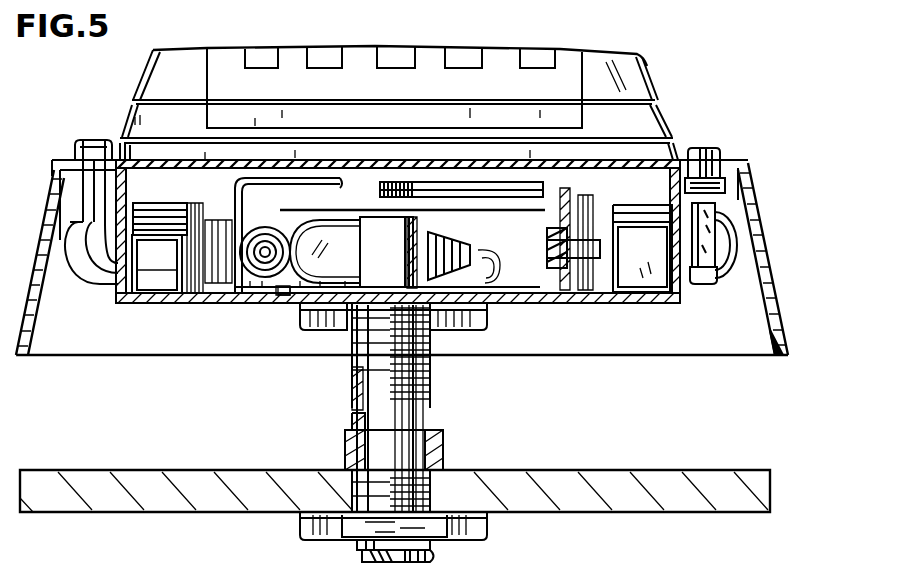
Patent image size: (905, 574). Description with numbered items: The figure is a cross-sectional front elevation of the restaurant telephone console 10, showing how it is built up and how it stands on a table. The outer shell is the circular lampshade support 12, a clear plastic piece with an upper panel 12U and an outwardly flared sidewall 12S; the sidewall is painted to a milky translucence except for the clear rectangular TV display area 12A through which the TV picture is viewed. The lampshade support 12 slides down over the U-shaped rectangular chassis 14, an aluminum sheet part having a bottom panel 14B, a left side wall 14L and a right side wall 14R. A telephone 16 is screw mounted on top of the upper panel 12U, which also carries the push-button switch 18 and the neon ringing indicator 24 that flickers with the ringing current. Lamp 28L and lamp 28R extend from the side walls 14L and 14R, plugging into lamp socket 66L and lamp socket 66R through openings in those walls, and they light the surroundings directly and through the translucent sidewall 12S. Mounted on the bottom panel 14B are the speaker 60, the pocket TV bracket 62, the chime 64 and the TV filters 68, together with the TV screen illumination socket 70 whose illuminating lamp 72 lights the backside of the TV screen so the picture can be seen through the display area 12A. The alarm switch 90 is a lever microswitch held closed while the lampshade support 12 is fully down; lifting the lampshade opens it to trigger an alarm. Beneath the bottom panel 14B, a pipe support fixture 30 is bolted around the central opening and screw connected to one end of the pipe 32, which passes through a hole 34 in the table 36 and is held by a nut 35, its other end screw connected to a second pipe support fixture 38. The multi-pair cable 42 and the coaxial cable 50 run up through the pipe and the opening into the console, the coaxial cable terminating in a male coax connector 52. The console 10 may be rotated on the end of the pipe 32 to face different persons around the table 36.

The restaurant telephone console 10 is at (241, 39).
The telephone 16 is at (637, 54).
The neon ringing indicator 24 is at (97, 140).
The lamp 28L is at (100, 280).
The lamp 28R is at (742, 200).
The upper panel 12U is at (723, 165).
The push-button switch 18 is at (678, 199).
The circular lampshade support 12 is at (781, 357).
The outwardly flared sidewall 12S is at (760, 298).
The rectangular TV display area 12A is at (755, 312).
The U-shaped rectangular chassis 14 is at (122, 302).
The left side wall 14L is at (110, 297).
The right side wall 14R is at (680, 293).
The bottom panel 14B is at (610, 303).
The lamp socket 66L is at (160, 220).
The chime 64 is at (168, 268).
The alarm switch 90 is at (157, 281).
The pocket TV bracket 62 is at (235, 183).
The male coax connector 52 is at (282, 225).
The illuminating lamp 72 is at (328, 232).
The TV screen illumination socket 70 is at (395, 252).
The speaker 60 is at (572, 190).
The lamp socket 66R is at (560, 240).
The TV filters 68 is at (650, 261).
The pipe support fixture 30 is at (462, 318).
The pipe 32 is at (430, 370).
The nut 35 is at (447, 445).
The table 36 is at (545, 468).
The hole 34 is at (352, 478).
The pipe support fixture 38 is at (486, 528).
The multi-pair cable 42 is at (363, 560).
The coaxial cable 50 is at (282, 292).